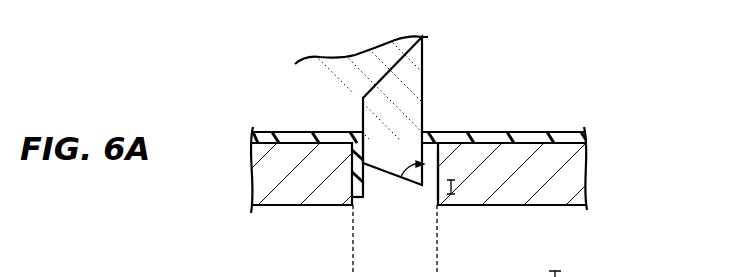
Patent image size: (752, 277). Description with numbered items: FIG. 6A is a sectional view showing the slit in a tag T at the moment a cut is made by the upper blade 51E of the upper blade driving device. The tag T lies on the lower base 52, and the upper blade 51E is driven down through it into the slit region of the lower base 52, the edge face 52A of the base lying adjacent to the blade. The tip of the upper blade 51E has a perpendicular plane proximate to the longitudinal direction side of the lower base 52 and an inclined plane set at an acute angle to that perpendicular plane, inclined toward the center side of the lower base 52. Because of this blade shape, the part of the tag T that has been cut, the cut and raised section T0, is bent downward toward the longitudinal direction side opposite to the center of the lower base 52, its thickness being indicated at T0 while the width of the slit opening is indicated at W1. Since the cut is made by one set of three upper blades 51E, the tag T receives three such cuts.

The upper blade 51E is at (413, 78).
The lower base 52 is at (566, 188).
The cut end face of plate 52A is at (437, 186).
The tag T is at (547, 132).
The cut and raised section T0 is at (368, 179).
The cut width W1 is at (437, 245).